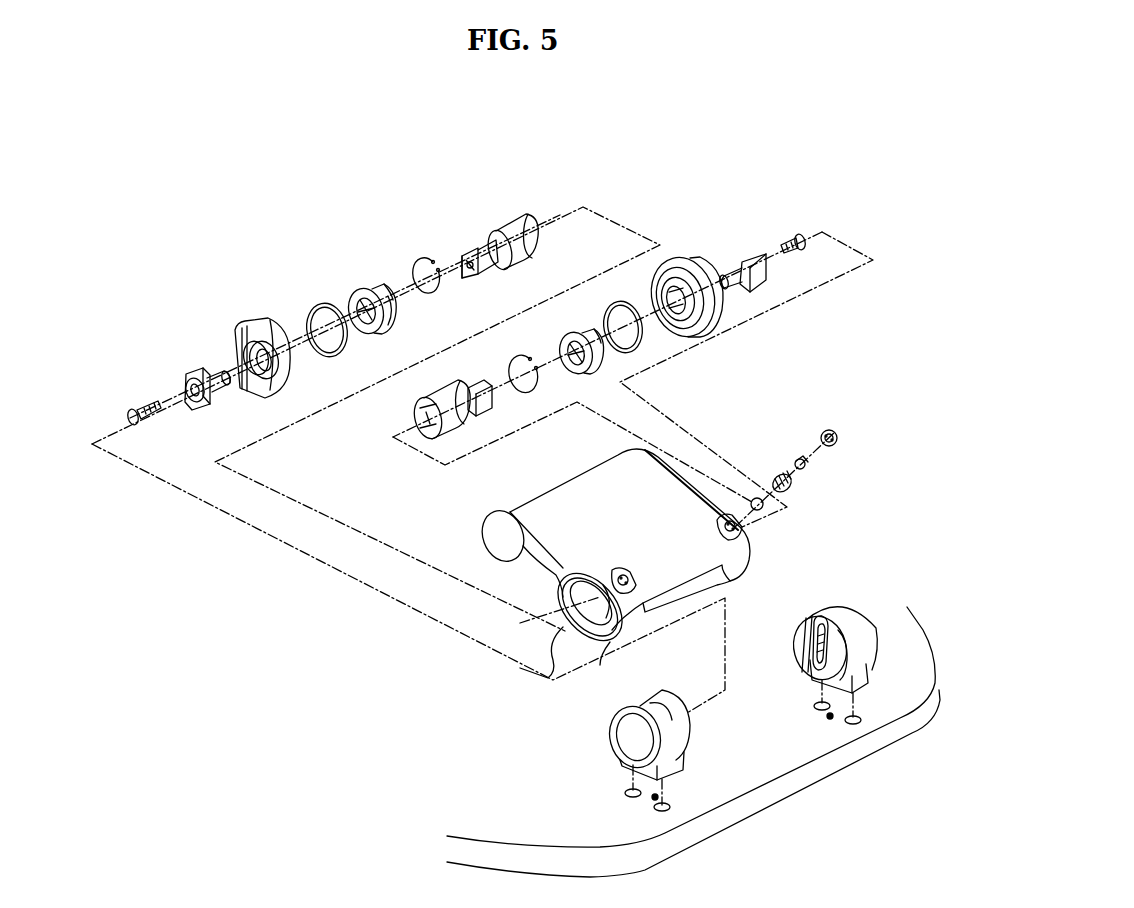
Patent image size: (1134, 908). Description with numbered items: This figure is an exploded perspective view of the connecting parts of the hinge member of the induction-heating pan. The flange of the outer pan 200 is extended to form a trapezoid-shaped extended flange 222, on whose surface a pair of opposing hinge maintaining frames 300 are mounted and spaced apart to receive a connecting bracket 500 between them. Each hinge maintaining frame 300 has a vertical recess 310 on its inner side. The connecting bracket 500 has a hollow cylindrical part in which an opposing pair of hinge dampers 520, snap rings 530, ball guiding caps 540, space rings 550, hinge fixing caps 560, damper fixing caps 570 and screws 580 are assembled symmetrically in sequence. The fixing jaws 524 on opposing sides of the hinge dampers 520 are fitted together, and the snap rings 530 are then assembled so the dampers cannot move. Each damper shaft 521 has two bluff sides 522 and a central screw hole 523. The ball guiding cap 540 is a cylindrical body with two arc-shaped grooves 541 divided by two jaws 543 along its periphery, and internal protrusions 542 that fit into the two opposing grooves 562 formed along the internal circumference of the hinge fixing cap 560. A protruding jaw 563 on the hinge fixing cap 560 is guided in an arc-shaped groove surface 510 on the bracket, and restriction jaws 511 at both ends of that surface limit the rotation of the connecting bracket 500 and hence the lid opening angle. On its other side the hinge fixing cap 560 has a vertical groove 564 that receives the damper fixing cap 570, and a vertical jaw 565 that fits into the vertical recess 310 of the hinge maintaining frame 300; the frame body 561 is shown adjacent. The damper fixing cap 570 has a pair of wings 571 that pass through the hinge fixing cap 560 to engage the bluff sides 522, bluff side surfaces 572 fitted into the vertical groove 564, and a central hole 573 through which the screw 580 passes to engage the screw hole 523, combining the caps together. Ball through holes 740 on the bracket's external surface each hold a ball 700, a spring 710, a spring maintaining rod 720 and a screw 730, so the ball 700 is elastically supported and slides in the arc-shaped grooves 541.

The main body 200 is at (708, 729).
The extended flange 222 is at (773, 755).
The hinge maintaining frame 300 is at (723, 678).
The vertical recess 310 is at (813, 680).
The connecting bracket 500 is at (660, 570).
The arc-shaped groove surface 510 is at (553, 676).
The restriction jaw 511 is at (563, 591).
The hinge damper 520 is at (504, 327).
The damper shaft 521 is at (476, 232).
The bluff sides 522 is at (497, 260).
The screw hole 523 is at (470, 262).
The fixing jaw 524 is at (547, 240).
The snap ring 530 is at (421, 257).
The ball guiding cap 540 is at (487, 313).
The arc-shaped groove 541 is at (398, 302).
The protrusion 542 is at (362, 335).
The jaw 543 is at (375, 318).
The space ring 550 is at (318, 296).
The hinge fixing cap 560 is at (505, 331).
The holder plate 561 is at (236, 332).
The groove 562 is at (690, 263).
The protruding jaw 563 is at (683, 322).
The vertical groove 564 is at (257, 386).
The vertical jaw 565 is at (287, 370).
The damper fixing cap 570 is at (514, 347).
The wing 571 is at (222, 400).
The bluff side surface 572 is at (206, 410).
The hole 573 is at (196, 408).
The screw 580 is at (133, 410).
The ball 700 is at (756, 498).
The spring 710 is at (779, 475).
The spring maintaining rod 720 is at (797, 458).
The screw 730 is at (843, 440).
The ball through hole 740 is at (753, 528).